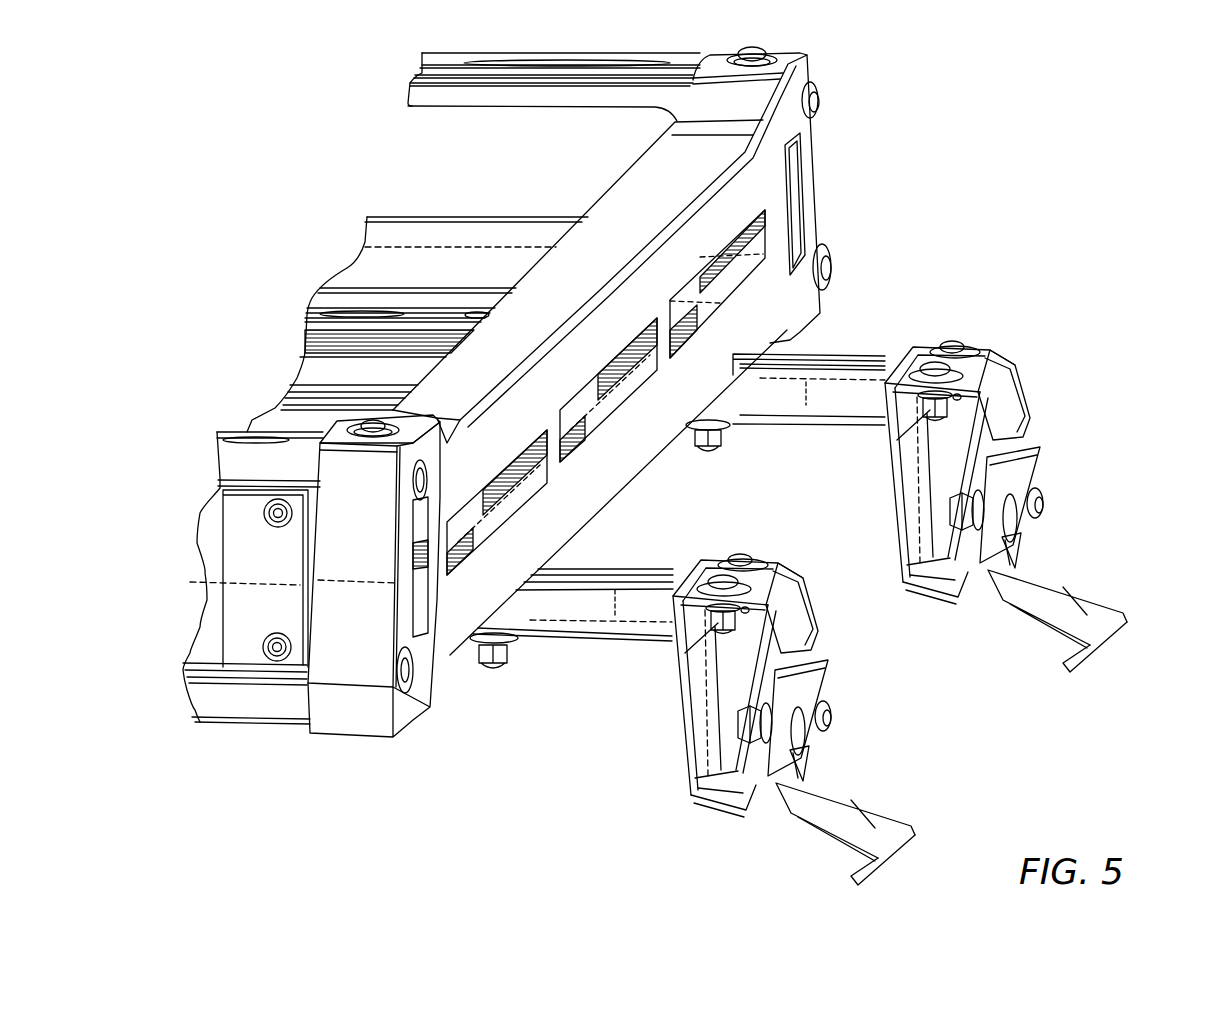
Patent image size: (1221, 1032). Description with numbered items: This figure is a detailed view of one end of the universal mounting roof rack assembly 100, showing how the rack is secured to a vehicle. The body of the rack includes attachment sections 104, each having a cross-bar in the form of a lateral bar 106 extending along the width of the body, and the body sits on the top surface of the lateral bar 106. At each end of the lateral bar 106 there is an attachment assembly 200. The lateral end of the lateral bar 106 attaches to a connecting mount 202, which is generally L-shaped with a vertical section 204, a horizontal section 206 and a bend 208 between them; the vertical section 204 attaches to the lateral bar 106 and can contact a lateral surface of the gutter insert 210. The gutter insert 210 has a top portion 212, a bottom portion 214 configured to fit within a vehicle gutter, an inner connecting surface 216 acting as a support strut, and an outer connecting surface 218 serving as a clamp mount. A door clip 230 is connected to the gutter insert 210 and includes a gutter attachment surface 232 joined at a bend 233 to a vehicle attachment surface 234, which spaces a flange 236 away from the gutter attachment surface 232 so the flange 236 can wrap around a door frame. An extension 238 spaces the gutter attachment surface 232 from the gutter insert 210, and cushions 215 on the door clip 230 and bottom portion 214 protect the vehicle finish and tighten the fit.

The roof rack assembly 100 is at (212, 127).
The attachment section 104 is at (891, 350).
The lateral bar 106 is at (848, 412).
The attachment assembly 200 is at (1114, 563).
The connecting mount 202 is at (693, 572).
The vertical section 204 is at (670, 637).
The horizontal section 206 is at (712, 563).
The bend 208 is at (697, 572).
The gutter insert 210 is at (996, 328).
The top portion 212 is at (996, 360).
The bottom portion 214 is at (690, 782).
The cushion 215 is at (725, 812).
The inner connecting surface 216 is at (698, 720).
The outer connecting surface 218 is at (1022, 397).
The door clip 230 is at (903, 767).
The gutter attachment surface 232 is at (1040, 478).
The bend 233 is at (819, 760).
The vehicle attachment surface 234 is at (855, 800).
The flange 236 is at (862, 878).
The extension 238 is at (1030, 462).